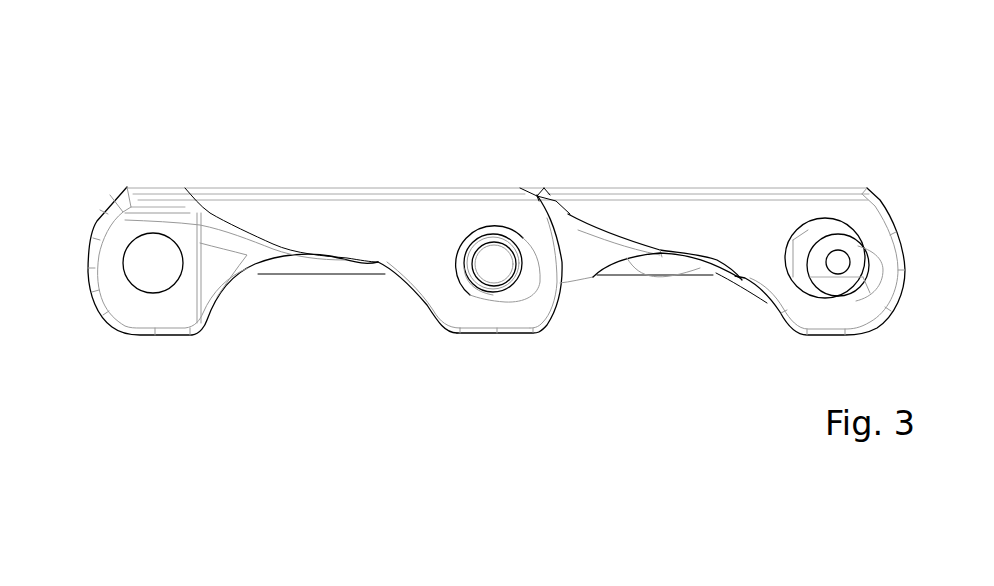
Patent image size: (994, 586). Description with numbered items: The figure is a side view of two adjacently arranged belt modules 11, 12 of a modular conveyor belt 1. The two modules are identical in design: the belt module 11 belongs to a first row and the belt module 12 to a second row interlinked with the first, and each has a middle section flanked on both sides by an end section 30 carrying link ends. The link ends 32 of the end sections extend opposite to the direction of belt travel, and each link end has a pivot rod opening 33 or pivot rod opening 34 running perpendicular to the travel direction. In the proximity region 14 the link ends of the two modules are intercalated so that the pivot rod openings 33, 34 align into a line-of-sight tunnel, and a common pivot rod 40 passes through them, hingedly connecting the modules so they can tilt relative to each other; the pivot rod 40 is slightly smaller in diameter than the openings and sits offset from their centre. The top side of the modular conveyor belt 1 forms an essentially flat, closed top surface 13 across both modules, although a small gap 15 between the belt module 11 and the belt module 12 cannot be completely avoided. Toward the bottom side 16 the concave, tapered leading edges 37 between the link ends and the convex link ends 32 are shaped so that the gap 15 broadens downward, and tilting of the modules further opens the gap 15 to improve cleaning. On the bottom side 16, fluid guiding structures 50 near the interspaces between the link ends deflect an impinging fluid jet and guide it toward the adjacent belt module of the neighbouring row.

The modular conveyor belt 1 is at (108, 105).
The belt module 11 is at (712, 217).
The belt module 12 is at (401, 210).
The top surface 13 is at (488, 140).
The proximity region 14 is at (533, 176).
The gap 15 is at (540, 188).
The bottom side 16 is at (493, 398).
The end section 30 is at (158, 366).
The link end 32 is at (540, 239).
The pivot rod opening 33 is at (148, 277).
The pivot rod opening 34 is at (455, 255).
The leading edge 37 is at (574, 214).
The pivot rod 40 is at (491, 268).
The fluid guiding structure 50 is at (716, 273).